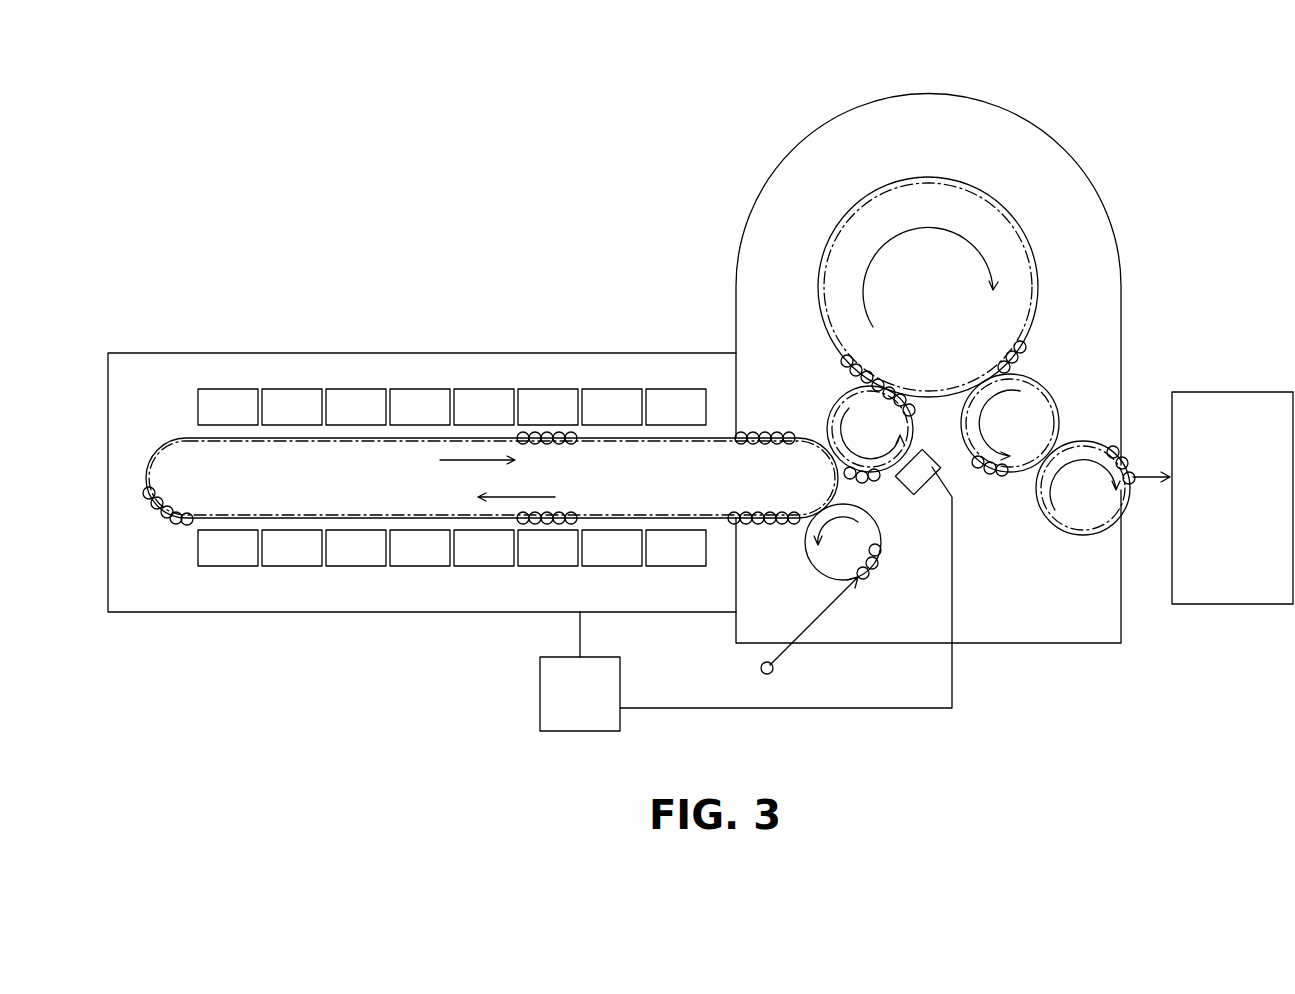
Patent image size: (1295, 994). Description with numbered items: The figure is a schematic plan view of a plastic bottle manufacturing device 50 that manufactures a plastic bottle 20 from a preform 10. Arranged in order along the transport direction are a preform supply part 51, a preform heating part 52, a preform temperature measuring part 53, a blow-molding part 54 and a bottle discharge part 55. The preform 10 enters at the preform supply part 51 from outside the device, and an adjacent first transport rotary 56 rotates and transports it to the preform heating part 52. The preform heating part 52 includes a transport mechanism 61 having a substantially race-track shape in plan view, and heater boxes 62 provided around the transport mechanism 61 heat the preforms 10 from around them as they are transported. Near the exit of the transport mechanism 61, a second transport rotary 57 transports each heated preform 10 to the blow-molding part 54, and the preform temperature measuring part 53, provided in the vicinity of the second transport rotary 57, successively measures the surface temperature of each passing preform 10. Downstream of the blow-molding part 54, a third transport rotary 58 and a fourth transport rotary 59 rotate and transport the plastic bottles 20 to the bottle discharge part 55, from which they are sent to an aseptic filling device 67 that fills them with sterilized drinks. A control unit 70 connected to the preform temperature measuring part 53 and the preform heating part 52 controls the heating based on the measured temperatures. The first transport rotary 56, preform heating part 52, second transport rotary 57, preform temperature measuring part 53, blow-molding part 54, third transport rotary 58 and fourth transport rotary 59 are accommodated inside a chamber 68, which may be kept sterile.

The preform 10 is at (176, 518).
The plastic bottle 20 is at (1026, 350).
The plastic bottle manufacturing device 50 is at (1126, 96).
The preform supply part 51 is at (795, 647).
The preform heating part 52 is at (167, 412).
The preform temperature measuring part 53 is at (935, 464).
The blow-molding part 54 is at (940, 203).
The bottle discharge part 55 is at (1134, 484).
The first transport rotary 56 is at (818, 565).
The second transport rotary 57 is at (848, 398).
The third transport rotary 58 is at (1050, 407).
The fourth transport rotary 59 is at (1085, 522).
The transport mechanism 61 is at (610, 517).
The heater boxes 62 is at (548, 407).
The aseptic filling device 67 is at (1219, 510).
The chamber 68 is at (762, 172).
The control unit 70 is at (566, 712).